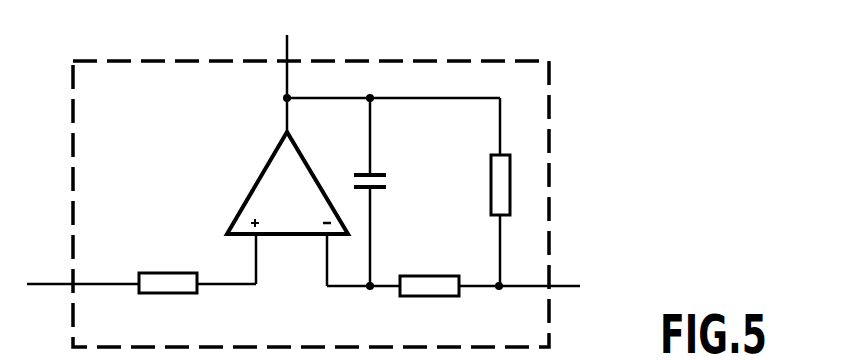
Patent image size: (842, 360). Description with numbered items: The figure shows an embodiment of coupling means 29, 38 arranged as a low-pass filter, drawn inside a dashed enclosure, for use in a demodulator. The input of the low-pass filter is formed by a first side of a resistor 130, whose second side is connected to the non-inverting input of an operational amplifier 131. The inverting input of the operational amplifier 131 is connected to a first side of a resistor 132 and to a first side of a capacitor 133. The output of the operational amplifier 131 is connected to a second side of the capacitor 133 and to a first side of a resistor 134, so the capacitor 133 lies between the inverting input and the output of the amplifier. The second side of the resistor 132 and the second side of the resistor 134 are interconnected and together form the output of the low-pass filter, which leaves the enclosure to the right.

The coupling means 29 is at (186, 58).
The coupling means 38 is at (311, 204).
The resistor 130 is at (192, 295).
The operational amplifier 131 is at (258, 182).
The resistor 132 is at (428, 297).
The capacitor 133 is at (387, 182).
The resistor 134 is at (491, 185).